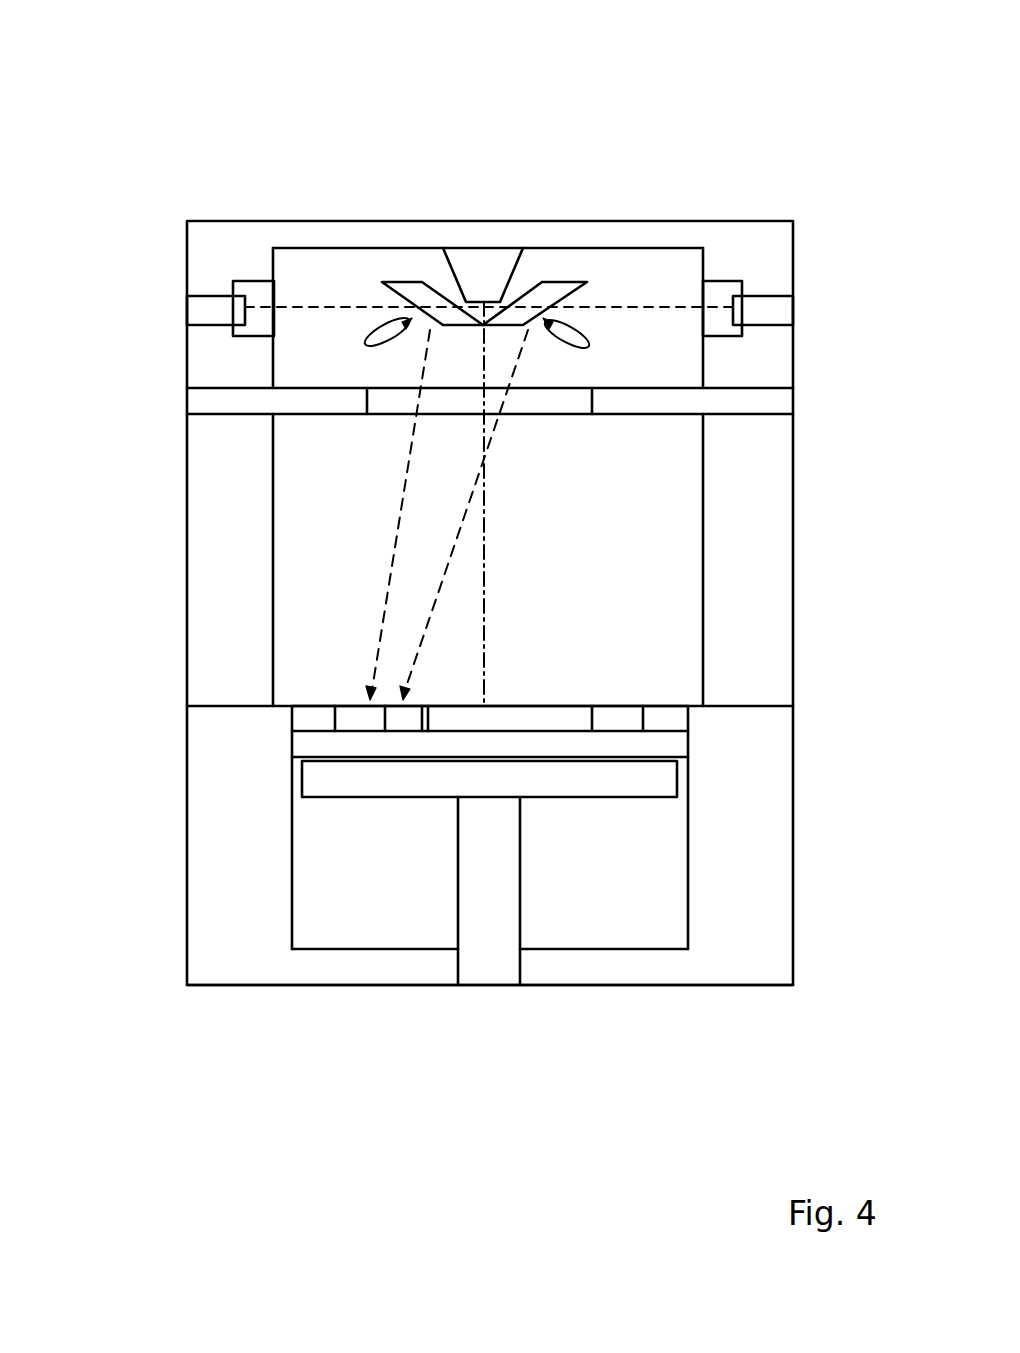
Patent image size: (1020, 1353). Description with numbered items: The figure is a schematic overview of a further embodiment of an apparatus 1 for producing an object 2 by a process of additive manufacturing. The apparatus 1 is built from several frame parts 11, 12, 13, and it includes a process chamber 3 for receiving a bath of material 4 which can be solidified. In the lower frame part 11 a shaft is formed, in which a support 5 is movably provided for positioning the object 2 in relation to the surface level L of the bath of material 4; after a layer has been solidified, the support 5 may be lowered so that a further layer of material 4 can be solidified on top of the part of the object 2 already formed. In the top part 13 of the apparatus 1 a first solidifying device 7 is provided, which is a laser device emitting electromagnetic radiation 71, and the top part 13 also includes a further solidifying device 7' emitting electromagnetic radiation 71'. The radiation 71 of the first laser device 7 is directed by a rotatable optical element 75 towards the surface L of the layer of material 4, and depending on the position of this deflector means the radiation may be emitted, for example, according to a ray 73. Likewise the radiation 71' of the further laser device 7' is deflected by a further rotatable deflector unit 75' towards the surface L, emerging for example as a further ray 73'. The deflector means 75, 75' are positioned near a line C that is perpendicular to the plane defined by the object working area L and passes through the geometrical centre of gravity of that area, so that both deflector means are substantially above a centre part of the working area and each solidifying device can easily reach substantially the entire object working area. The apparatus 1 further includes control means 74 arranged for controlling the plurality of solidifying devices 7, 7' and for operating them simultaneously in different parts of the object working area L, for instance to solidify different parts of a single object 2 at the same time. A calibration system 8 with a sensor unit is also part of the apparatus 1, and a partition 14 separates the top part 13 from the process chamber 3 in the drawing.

The apparatus 1 is at (243, 176).
The object 2 is at (617, 723).
The process chamber 3 is at (340, 594).
The bath of material 4 is at (532, 715).
The support 5 is at (638, 825).
The first solidifying device 7 is at (748, 205).
The further solidifying device 7' is at (189, 304).
The calibration system 8 is at (736, 152).
The lower frame part 11 is at (226, 890).
The frame part 12 is at (226, 591).
The top part 13 is at (213, 248).
The partition 14 is at (306, 398).
The electromagnetic radiation 71 is at (608, 175).
The electromagnetic radiation 71' is at (364, 182).
The ray 73 is at (627, 515).
The first deflected beam 73' is at (249, 515).
The control means 74 is at (483, 270).
The rotatable optical element 75 is at (544, 222).
The further rotatable deflector unit 75' is at (422, 218).
The line C is at (487, 572).
The surface level L is at (540, 703).